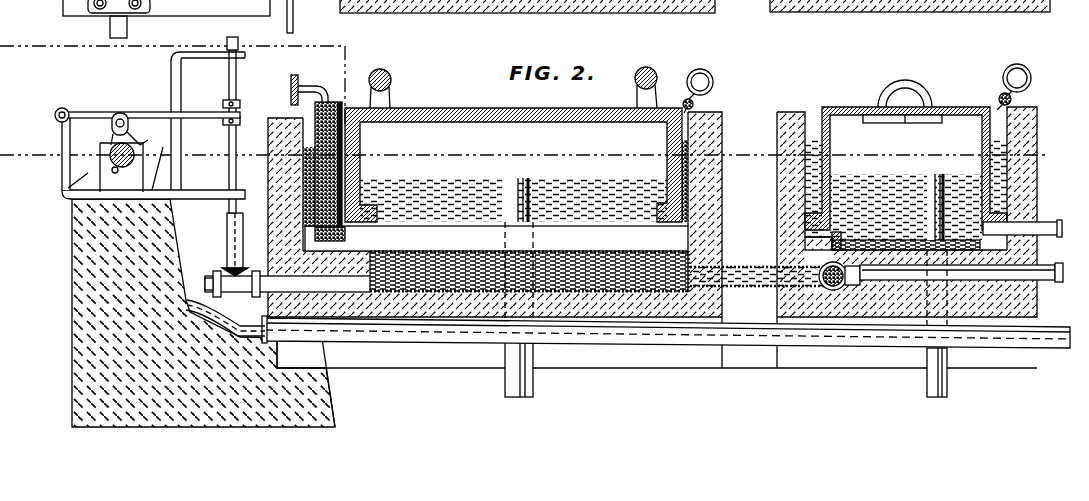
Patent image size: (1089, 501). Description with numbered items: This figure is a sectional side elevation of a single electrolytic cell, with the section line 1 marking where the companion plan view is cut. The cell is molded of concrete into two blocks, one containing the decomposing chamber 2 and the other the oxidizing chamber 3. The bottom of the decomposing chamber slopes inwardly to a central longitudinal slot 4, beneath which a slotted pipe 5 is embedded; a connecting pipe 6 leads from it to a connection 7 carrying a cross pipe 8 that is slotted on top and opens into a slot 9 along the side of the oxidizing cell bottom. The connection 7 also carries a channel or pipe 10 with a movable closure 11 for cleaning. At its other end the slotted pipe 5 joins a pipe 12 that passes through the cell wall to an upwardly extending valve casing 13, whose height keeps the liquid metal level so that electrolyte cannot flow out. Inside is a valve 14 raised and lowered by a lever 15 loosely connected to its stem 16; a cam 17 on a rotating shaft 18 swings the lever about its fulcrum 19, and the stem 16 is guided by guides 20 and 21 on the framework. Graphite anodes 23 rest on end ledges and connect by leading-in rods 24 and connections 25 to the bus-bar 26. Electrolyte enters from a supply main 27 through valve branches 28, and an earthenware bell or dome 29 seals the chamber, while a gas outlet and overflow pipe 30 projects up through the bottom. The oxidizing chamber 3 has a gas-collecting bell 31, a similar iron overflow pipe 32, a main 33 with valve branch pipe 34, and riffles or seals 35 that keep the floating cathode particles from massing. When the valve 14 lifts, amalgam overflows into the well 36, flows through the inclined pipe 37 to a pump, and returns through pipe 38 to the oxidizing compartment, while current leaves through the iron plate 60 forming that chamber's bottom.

The section line I—I 1 is at (1037, 150).
The decomposing chamber 2 is at (513, 152).
The oxidizing chamber 3 is at (906, 160).
The central longitudinal slot 4 is at (374, 258).
The slotted pipe 5 is at (440, 288).
The connecting pipe 6 is at (763, 287).
The connection 7 is at (826, 287).
The cross pipe 8 is at (840, 288).
The slot 9 is at (834, 234).
The channel or pipe 10 is at (962, 261).
The movable closure 11 is at (857, 280).
The pipe 12 is at (308, 294).
The valve casing 13 is at (245, 271).
The valve 14 is at (243, 232).
The lever 15 is at (205, 113).
The valve stem 16 is at (234, 146).
The cam 17 is at (131, 136).
The rotating shaft 18 is at (115, 167).
The fulcrum 19 is at (63, 109).
The guide 20 is at (240, 57).
The guide 21 is at (201, 192).
The anodes 23 is at (496, 237).
The leading-in rods 24 is at (315, 106).
The connections 25 is at (314, 88).
The bus-bar 26 is at (291, 85).
The supply main 27 is at (713, 82).
The valve branch 28 is at (704, 103).
The bell or dome 29 is at (464, 108).
The gas outlet and overflow pipe 30 is at (520, 178).
The gas-collecting bell 31 is at (846, 108).
The gas outlet and overflow pipe 32 is at (931, 178).
The main 33 is at (1017, 70).
The valve branch pipe 34 is at (1013, 100).
The riffles or seals 35 is at (903, 240).
The well 36 is at (225, 314).
The inclined pipe 37 is at (403, 330).
The pipe 38 is at (1046, 229).
The iron plate 60 is at (779, 246).